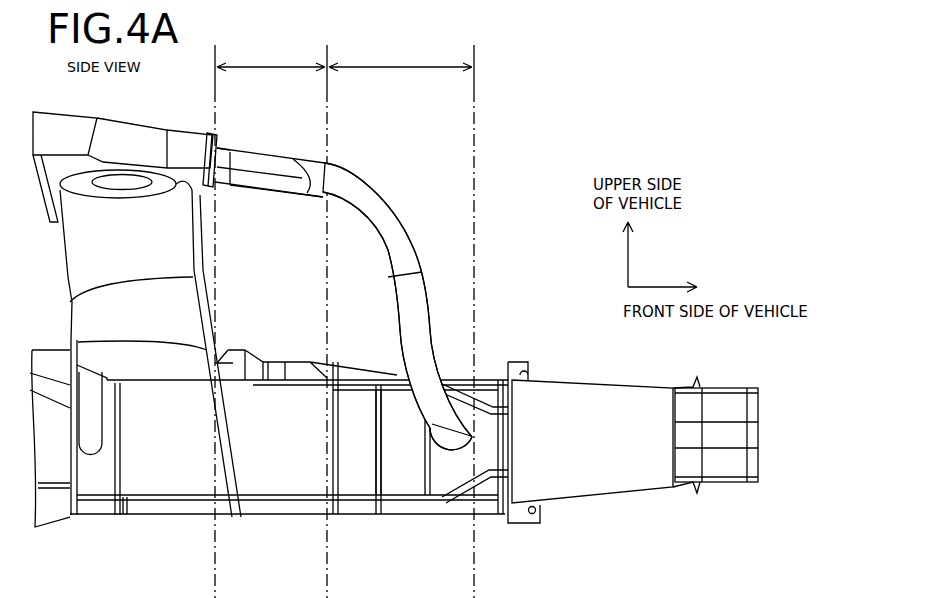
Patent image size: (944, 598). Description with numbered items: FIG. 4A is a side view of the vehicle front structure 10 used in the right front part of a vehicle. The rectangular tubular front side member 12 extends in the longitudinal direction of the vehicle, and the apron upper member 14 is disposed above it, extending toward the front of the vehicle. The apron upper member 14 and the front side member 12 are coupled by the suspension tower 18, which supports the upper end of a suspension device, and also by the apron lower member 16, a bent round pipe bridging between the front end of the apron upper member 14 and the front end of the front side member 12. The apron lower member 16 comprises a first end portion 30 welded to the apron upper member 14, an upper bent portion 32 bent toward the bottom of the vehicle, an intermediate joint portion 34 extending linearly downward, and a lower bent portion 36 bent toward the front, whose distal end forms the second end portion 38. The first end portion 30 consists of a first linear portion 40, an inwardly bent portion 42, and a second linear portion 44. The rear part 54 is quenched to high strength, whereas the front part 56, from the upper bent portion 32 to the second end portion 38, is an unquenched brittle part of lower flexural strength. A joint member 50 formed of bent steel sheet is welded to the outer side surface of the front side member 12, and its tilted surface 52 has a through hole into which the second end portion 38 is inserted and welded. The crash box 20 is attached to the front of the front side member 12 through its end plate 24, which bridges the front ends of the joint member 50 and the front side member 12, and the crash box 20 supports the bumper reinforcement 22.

The vehicle front structure 10 is at (526, 182).
The front side member 12 is at (287, 485).
The apron upper member 14 is at (148, 152).
The apron lower member 16 is at (386, 174).
The suspension tower 18 is at (83, 275).
The crash box 20 is at (592, 487).
The bumper reinforcement 22 is at (725, 470).
The end plate 24 is at (512, 392).
The first end portion 30 is at (271, 223).
The upper bent portion 32 is at (400, 227).
The intermediate joint portion 34 is at (405, 313).
The lower bent portion 36 is at (452, 410).
The second end portion 38 is at (470, 453).
The first linear portion 40 is at (222, 180).
The inwardly bent portion 42 is at (260, 160).
The second linear portion 44 is at (308, 190).
The joint member 50 is at (395, 402).
The tilted surface 52 is at (450, 470).
The rear part 54 is at (271, 57).
The front part 56 is at (400, 57).